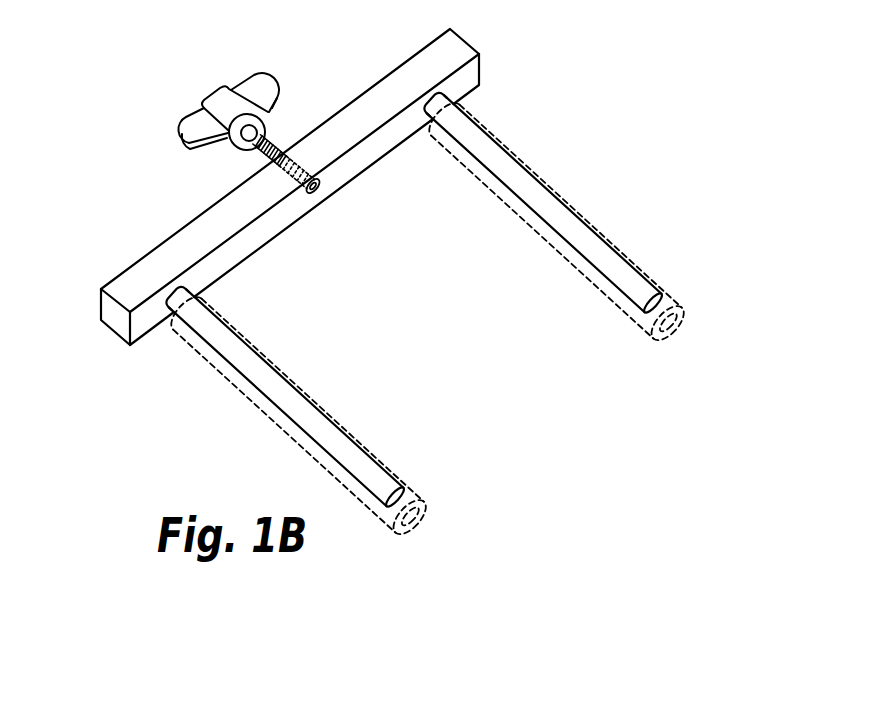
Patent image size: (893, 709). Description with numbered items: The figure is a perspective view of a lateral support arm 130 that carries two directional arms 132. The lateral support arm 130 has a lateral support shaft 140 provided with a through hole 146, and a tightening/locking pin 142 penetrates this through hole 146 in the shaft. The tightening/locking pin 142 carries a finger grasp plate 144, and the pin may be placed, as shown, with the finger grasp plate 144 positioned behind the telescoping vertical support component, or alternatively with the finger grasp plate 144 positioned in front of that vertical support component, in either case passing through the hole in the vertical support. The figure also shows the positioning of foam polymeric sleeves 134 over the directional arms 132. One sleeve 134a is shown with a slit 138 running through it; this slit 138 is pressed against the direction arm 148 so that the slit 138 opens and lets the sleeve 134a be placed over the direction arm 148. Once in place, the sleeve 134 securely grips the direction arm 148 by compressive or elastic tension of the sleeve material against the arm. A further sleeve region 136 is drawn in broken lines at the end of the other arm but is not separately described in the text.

The lateral support arm 130 is at (136, 416).
The directional arm 132 is at (190, 300).
The foam polymeric sleeve 134 is at (402, 480).
The sleeve 134a is at (586, 277).
The first sleeve 136 is at (427, 508).
The slit 138 is at (650, 345).
The lateral support shaft 140 is at (187, 232).
The tightening/locking pin 142 is at (297, 119).
The finger grasp plate 144 is at (197, 130).
The through hole 146 is at (320, 193).
The direction arm 148 is at (437, 113).